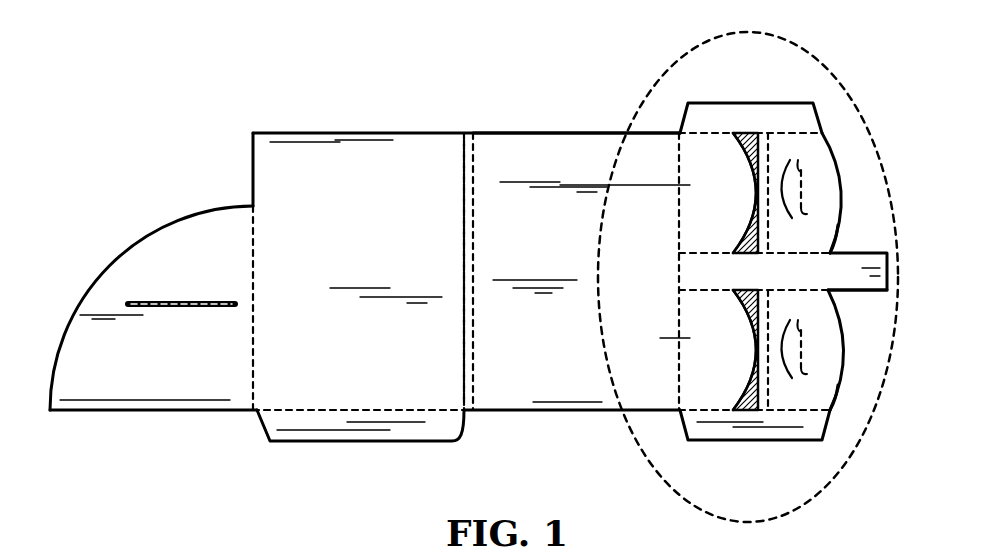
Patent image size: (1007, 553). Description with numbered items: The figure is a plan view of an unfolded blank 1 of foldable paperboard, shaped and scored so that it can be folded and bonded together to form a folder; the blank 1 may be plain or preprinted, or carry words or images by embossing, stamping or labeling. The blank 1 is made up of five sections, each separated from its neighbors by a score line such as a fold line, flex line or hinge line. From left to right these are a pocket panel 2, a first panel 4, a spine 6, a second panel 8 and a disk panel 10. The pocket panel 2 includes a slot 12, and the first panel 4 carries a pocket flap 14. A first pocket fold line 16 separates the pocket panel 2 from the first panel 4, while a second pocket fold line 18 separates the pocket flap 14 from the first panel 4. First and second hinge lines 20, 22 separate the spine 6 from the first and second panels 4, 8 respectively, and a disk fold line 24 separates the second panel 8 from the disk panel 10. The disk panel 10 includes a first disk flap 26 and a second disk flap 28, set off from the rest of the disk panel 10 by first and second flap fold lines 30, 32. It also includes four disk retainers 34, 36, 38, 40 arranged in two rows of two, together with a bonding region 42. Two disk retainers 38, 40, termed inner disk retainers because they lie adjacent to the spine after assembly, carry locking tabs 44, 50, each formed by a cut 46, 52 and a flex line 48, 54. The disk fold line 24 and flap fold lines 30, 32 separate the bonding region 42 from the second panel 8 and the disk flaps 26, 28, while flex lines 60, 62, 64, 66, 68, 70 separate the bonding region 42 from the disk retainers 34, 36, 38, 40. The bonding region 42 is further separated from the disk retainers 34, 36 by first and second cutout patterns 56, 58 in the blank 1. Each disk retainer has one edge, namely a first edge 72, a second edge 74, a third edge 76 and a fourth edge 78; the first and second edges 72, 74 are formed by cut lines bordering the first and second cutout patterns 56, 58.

The blank 1 is at (157, 76).
The pocket panel 2 is at (207, 220).
The first panel 4 is at (270, 170).
The spine 6 is at (467, 133).
The second panel 8 is at (568, 142).
The disk panel 10 is at (658, 80).
The slot 12 is at (168, 308).
The pocket flap 14 is at (452, 425).
The first pocket fold line 16 is at (257, 278).
The second pocket fold line 18 is at (334, 410).
The first hinge line 20 is at (465, 333).
The second hinge line 22 is at (475, 334).
The disk fold line 24 is at (680, 225).
The first disk flap 26 is at (693, 115).
The second disk flap 28 is at (703, 430).
The first flap fold line 30 is at (805, 130).
The second flap fold line 32 is at (808, 412).
The disk retainer 34 is at (690, 185).
The disk retainer 36 is at (690, 338).
The inner disk retainer 38 is at (840, 213).
The inner disk retainer 40 is at (845, 355).
The bonding region 42 is at (863, 258).
The locking tab 44 is at (783, 177).
The cut 46 is at (799, 168).
The flex line 48 is at (806, 182).
The locking tab 50 is at (787, 338).
The cut 52 is at (803, 322).
The flex line 54 is at (803, 352).
The first cutout pattern 56 is at (746, 135).
The second cutout pattern 58 is at (748, 303).
The flex line 60 is at (692, 262).
The flex line 62 is at (694, 268).
The flex line 64 is at (765, 250).
The flex line 66 is at (808, 256).
The flex line 68 is at (766, 292).
The flex line 70 is at (812, 292).
The first edge 72 is at (743, 150).
The second edge 74 is at (748, 387).
The third edge 76 is at (836, 240).
The fourth edge 78 is at (835, 398).